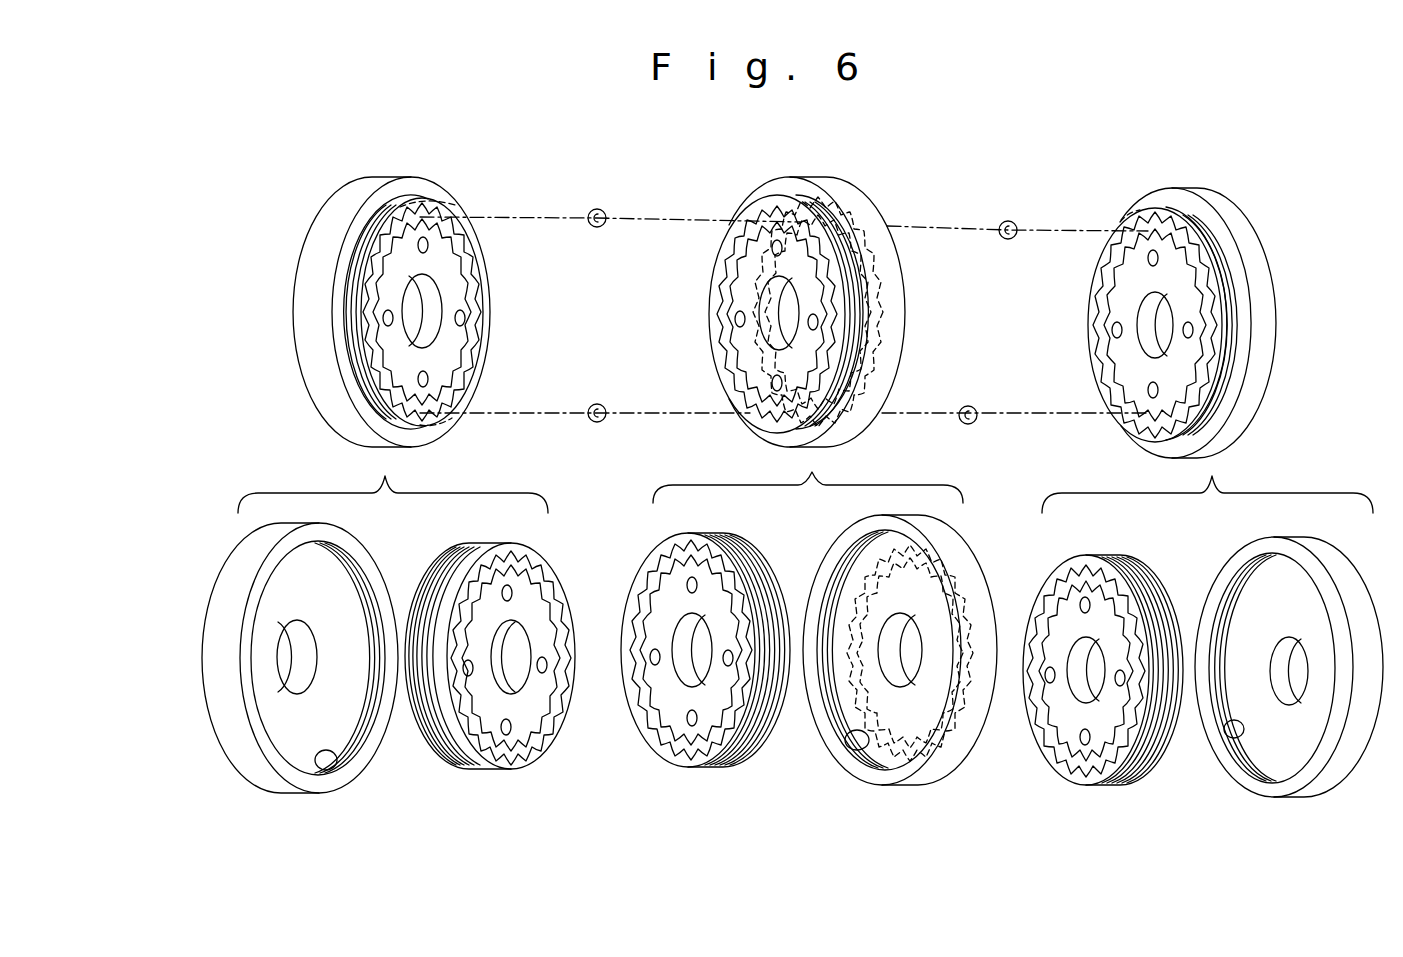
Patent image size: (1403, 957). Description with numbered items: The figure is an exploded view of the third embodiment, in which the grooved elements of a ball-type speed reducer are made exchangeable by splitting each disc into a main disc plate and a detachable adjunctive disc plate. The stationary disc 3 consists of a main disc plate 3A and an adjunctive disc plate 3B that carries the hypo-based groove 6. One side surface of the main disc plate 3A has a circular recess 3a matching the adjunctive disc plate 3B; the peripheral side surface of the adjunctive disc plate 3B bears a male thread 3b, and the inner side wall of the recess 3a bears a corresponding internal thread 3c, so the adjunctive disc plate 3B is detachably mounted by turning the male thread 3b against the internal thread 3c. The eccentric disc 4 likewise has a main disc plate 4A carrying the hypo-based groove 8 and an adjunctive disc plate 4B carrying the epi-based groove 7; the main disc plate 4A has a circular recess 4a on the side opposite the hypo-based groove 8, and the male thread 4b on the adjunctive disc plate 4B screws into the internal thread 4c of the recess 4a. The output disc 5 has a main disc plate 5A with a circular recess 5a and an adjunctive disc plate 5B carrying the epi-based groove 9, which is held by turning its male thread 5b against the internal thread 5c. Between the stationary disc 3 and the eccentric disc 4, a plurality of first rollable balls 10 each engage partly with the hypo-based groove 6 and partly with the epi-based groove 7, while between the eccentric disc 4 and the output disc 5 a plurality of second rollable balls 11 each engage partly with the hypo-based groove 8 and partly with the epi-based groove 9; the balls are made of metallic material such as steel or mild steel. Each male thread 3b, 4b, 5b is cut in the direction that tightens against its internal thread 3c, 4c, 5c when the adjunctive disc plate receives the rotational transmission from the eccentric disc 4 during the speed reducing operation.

The stationary disc 3 is at (352, 172).
The main disc plate 3A is at (303, 264).
The adjunctive disc plate 3B is at (440, 255).
The circular recess 3a is at (318, 582).
The male thread 3b is at (447, 762).
The internal thread 3c is at (320, 770).
The eccentric disc 4 is at (773, 176).
The main disc plate 4A is at (840, 196).
The adjunctive disc plate 4B is at (761, 247).
The circular recess 4a is at (910, 720).
The male thread 4b is at (743, 750).
The internal thread 4c is at (855, 732).
The output disc 5 is at (1198, 178).
The main disc plate 5A is at (1250, 256).
The adjunctive disc plate 5B is at (1128, 285).
The circular recess 5a is at (1277, 757).
The male thread 5b is at (1138, 760).
The internal thread 5c is at (1223, 722).
The hypo-based groove 6 is at (432, 215).
The epi-based groove 7 is at (793, 210).
The hypo-based groove 8 is at (866, 267).
The epi-based groove 9 is at (1125, 237).
The first rollable balls 10 is at (596, 209).
The second rollable balls 11 is at (1012, 222).